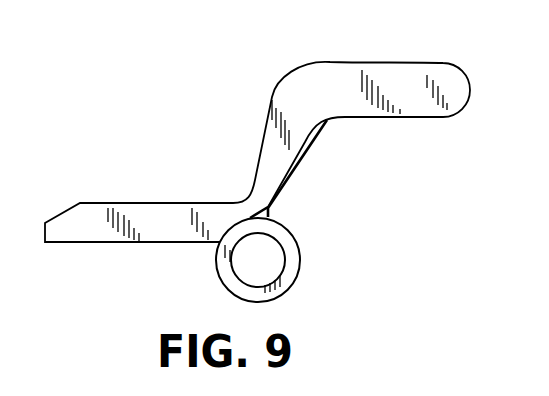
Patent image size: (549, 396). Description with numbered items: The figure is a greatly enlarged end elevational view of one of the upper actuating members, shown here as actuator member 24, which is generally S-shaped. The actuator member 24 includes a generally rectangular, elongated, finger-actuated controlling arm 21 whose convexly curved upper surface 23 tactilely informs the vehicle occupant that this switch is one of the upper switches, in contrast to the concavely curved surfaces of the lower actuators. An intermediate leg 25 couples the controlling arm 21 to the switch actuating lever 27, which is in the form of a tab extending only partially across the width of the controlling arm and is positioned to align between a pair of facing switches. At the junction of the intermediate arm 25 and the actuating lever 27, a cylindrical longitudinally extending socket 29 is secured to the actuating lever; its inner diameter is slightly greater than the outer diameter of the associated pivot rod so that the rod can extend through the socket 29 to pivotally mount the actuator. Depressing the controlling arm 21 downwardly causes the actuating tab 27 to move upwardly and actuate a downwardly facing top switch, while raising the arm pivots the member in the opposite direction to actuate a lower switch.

The controlling arm 21 is at (372, 117).
The convexly curved upper surface 23 is at (367, 70).
The actuator member 24 is at (165, 201).
The intermediate leg 25 is at (282, 170).
The actuating lever 27 is at (102, 223).
The cylindrical socket 29 is at (296, 240).